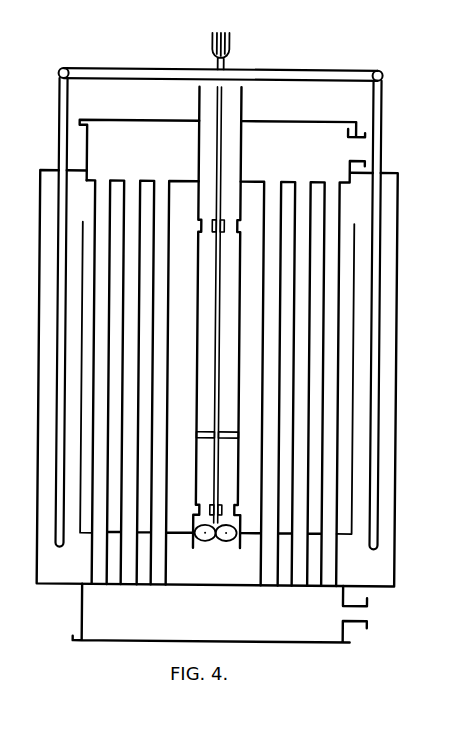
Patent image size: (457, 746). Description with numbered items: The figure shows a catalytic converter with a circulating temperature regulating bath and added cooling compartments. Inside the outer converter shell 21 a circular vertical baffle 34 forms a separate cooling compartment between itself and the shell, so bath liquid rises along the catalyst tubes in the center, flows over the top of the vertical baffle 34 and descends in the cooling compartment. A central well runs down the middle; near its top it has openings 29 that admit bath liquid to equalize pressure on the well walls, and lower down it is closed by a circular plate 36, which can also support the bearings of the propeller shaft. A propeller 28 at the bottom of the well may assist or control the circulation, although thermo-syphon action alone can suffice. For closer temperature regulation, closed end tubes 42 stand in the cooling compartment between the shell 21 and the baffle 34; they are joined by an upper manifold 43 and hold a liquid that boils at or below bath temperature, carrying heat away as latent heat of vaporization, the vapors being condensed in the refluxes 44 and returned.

The converter shell 21 is at (396, 383).
The propeller 28 is at (215, 542).
The openings 29 is at (224, 220).
The vertical baffle 34 is at (355, 310).
The circular plate 36 is at (232, 432).
The closed end tubes 42 is at (383, 166).
The upper manifold 43 is at (318, 70).
The refluxes 44 is at (232, 52).